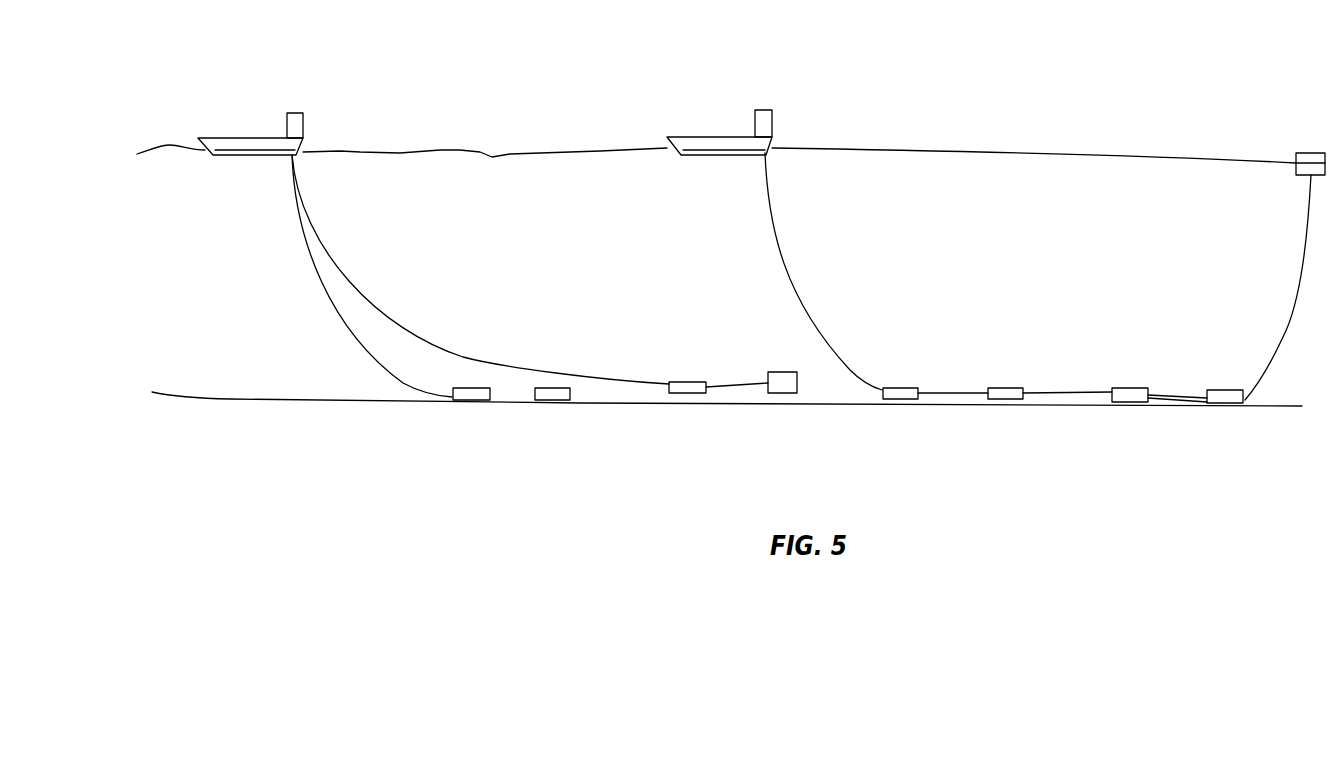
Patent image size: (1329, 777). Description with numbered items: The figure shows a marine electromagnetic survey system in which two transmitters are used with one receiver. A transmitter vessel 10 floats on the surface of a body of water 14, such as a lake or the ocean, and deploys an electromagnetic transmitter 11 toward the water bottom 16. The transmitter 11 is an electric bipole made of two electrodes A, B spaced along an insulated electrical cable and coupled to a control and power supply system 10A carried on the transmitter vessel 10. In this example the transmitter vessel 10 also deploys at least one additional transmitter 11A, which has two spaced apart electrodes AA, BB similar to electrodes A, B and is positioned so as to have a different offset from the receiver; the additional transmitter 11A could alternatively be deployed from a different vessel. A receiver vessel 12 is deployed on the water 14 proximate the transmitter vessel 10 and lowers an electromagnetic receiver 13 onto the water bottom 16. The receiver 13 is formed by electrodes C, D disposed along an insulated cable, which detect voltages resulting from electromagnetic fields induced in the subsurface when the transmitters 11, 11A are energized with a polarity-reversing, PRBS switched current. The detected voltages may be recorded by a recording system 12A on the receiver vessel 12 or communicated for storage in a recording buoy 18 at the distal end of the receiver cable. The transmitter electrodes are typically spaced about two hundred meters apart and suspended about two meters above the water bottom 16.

The transmitter vessel 10 is at (253, 135).
The control and power supply system 10A is at (297, 128).
The electromagnetic transmitter 11 is at (323, 313).
The additional transmitter 11A is at (442, 342).
The receiver vessel 12 is at (713, 133).
The recording system 12A is at (765, 127).
The electromagnetic receiver 13 is at (790, 278).
The body of water 14 is at (1255, 160).
The water bottom 16 is at (327, 403).
The recording buoy 18 is at (1310, 153).
The electrode A is at (473, 402).
The electrode B is at (555, 402).
The electrode AA is at (687, 395).
The electrode BB is at (783, 395).
The electrode C is at (902, 400).
The electrode D is at (1005, 400).